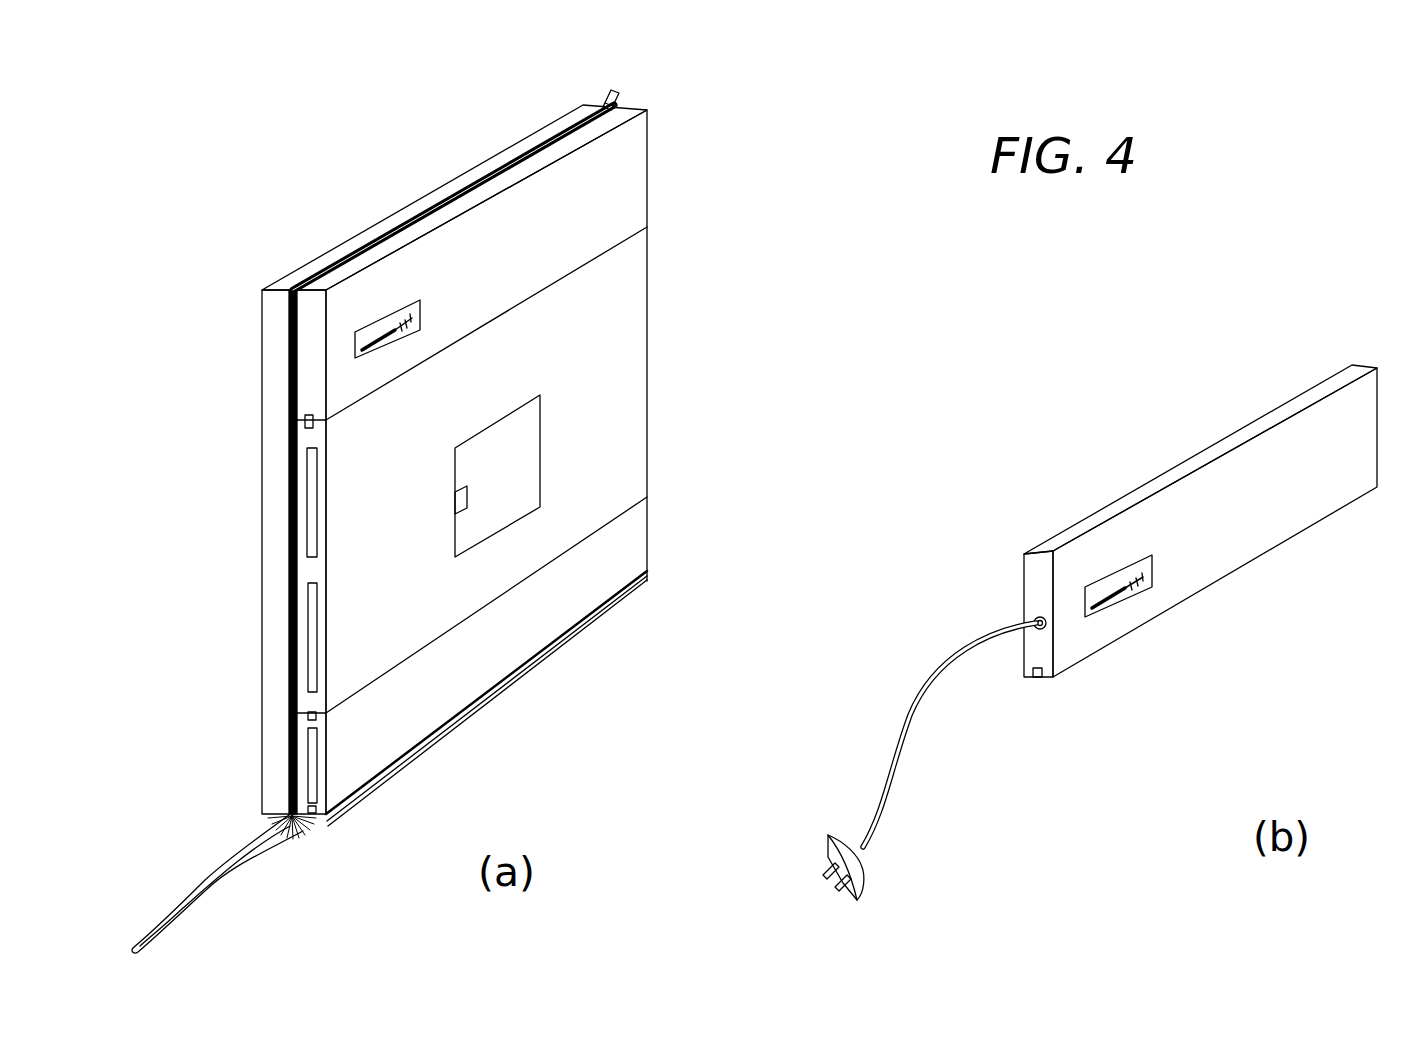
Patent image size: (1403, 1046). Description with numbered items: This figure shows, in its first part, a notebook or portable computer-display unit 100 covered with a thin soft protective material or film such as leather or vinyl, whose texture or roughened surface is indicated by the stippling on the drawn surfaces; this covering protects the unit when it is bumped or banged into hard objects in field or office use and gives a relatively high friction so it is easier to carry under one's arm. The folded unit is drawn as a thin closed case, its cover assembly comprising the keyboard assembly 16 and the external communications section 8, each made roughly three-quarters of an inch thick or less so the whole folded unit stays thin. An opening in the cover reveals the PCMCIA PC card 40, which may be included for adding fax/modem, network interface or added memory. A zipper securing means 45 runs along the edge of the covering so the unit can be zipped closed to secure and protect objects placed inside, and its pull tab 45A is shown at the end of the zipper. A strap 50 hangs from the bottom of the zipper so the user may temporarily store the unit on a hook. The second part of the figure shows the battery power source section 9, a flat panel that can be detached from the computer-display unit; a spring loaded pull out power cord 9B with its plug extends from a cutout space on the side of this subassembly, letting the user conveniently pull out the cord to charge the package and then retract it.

The computer-display unit 100 is at (338, 132).
The battery power source section 9 is at (628, 195).
The pull out power cord 9B is at (910, 775).
The external communications section 8 is at (632, 527).
The keyboard assembly 16 is at (640, 372).
The PCMCIA PC card 40 is at (417, 317).
The zipper securing means 45 is at (288, 572).
The pull tab 45A is at (618, 97).
The strap 50 is at (230, 862).